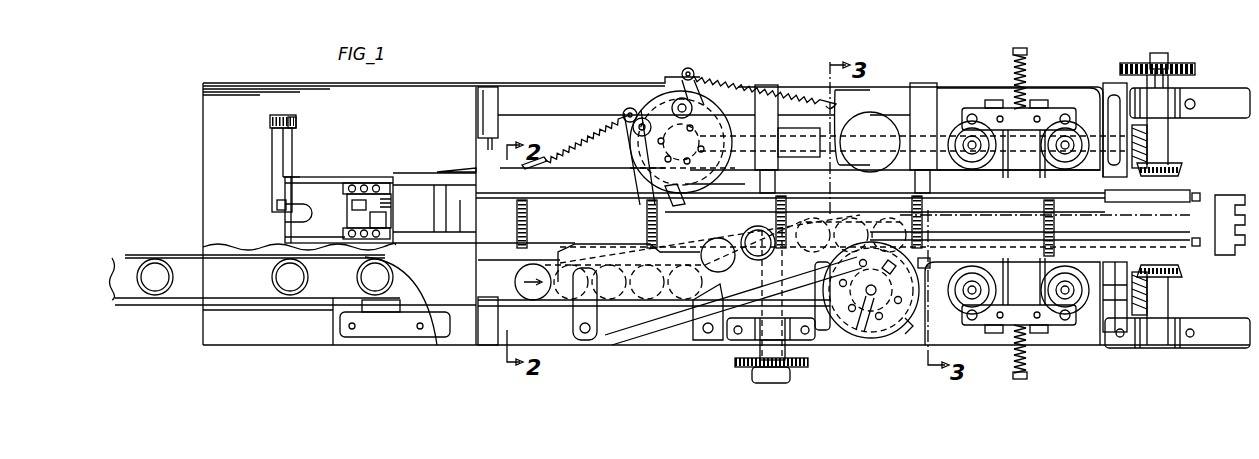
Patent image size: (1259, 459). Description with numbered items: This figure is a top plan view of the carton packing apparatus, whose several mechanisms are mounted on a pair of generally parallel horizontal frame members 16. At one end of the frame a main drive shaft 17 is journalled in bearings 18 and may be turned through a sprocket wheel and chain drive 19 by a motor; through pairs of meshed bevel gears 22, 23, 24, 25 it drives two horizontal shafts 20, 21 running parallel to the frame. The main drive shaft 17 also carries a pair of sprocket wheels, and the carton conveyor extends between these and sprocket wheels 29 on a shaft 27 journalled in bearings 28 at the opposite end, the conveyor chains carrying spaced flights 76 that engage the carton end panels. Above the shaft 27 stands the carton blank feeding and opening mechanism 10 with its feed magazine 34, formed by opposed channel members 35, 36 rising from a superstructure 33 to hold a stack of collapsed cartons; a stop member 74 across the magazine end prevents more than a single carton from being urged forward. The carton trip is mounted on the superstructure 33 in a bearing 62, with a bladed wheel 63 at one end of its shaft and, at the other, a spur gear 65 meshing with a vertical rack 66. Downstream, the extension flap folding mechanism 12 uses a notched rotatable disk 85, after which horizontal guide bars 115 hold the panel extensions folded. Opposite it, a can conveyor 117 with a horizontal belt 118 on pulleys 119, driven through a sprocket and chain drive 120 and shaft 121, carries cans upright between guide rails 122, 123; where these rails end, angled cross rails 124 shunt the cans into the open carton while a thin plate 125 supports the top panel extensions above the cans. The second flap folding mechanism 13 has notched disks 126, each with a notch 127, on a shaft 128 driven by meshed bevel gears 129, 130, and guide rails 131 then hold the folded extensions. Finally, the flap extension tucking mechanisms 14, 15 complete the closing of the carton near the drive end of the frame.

The carton blank feeding and opening mechanism 10 is at (387, 177).
The extension flap folding mechanism 12 is at (651, 76).
The extension flap folding mechanism 13 is at (872, 347).
The flap extension tucking mechanism 14 is at (1075, 72).
The flap extension tucking mechanism 15 is at (1059, 357).
The horizontal frame members 16 is at (507, 92).
The main drive shaft 17 is at (1163, 140).
The bearings 18 is at (1188, 104).
The sprocket wheel and chain drive 19 is at (1178, 66).
The horizontal shaft 20 is at (737, 105).
The horizontal shaft 21 is at (930, 290).
The bevel gear 22 is at (1148, 150).
The bevel gear 23 is at (1183, 171).
The bevel gear 24 is at (1178, 275).
The bevel gear 25 is at (1170, 298).
The shaft 27 is at (345, 305).
The bearings 28 is at (385, 333).
The sprocket wheels 29 is at (388, 190).
The superstructure 33 is at (432, 268).
The feed magazine 34 is at (280, 227).
The channel member 35 is at (292, 178).
The channel member 36 is at (472, 172).
The bearing 62 is at (283, 148).
The wheel 63 is at (277, 207).
The spur gear 65 is at (296, 122).
The rack 66 is at (270, 122).
The stop member 74 is at (484, 105).
The flights 76 is at (511, 241).
The rotatable disk 85 is at (706, 180).
The guide bars 115 is at (893, 193).
The can conveyor 117 is at (562, 308).
The belt 118 is at (509, 291).
The pulleys 119 is at (745, 328).
The sprocket and chain drive 120 is at (800, 360).
The shaft 121 is at (765, 352).
The guide rail 122 is at (280, 258).
The guide rail 123 is at (272, 302).
The cross rails 124 is at (622, 320).
The plate 125 is at (605, 242).
The disks 126 is at (845, 340).
The notch 127 is at (905, 334).
The shaft 128 is at (872, 317).
The bevel gear 129 is at (884, 262).
The bevel gear 130 is at (926, 263).
The guide rails 131 is at (985, 242).